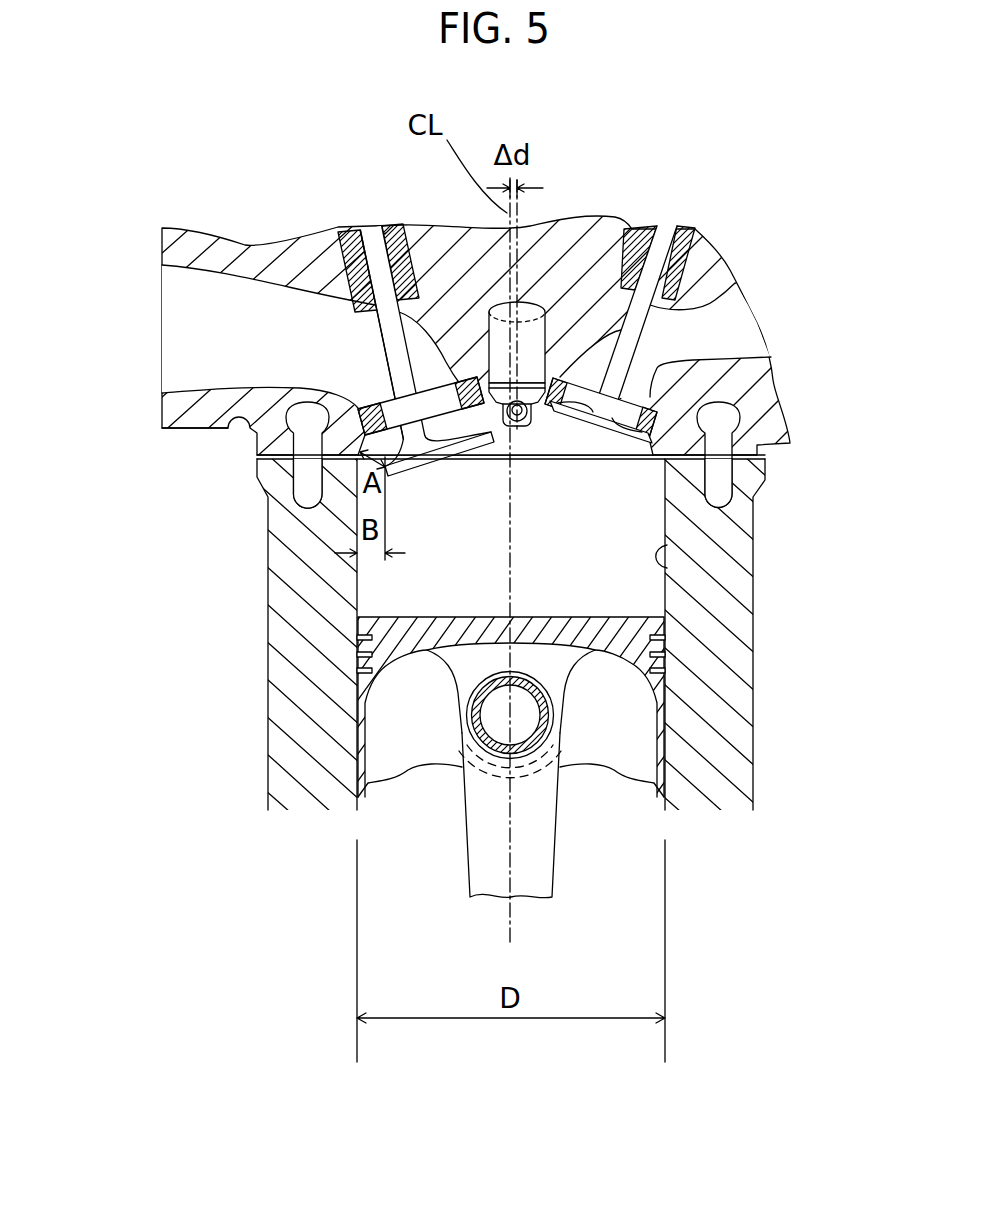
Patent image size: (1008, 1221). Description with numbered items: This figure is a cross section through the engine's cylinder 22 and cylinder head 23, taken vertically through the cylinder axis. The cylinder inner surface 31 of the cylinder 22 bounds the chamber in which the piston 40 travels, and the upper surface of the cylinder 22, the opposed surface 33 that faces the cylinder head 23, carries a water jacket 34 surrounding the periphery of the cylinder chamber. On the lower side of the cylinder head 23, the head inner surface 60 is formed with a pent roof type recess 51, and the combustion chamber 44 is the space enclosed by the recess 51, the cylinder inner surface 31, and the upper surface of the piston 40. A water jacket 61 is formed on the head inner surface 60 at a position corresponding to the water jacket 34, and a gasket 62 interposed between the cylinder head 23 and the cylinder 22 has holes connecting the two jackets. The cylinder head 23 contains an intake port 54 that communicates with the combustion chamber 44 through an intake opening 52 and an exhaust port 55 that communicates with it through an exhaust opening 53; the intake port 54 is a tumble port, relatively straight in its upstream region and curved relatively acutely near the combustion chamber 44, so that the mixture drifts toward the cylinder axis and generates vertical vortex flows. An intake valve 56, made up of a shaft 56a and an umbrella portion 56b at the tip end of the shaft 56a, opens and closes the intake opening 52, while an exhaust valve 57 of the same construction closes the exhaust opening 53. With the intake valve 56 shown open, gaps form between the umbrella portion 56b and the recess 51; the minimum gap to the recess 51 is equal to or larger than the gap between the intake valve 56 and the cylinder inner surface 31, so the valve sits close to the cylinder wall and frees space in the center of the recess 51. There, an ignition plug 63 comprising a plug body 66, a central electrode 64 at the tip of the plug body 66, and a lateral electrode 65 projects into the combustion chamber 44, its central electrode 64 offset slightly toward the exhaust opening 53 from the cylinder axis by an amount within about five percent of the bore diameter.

The cylinder 22 is at (268, 660).
The cylinder head 23 is at (252, 422).
The cylinder inner surface 31 is at (668, 568).
The opposed surface 33 is at (737, 453).
The water jacket 34 is at (294, 487).
The piston 40 is at (557, 617).
The combustion chamber 44 is at (430, 560).
The recess 51 is at (668, 555).
The intake opening 52 is at (457, 402).
The exhaust opening 53 is at (647, 407).
The intake port 54 is at (193, 320).
The exhaust port 55 is at (723, 330).
The intake valve 56 is at (325, 331).
The shaft 56a is at (393, 353).
The umbrella portion 56b is at (397, 407).
The exhaust valve 57 is at (735, 285).
The head inner surface 60 is at (752, 538).
The water jacket 61 is at (290, 447).
The gasket 62 is at (768, 458).
The ignition plug 63 is at (595, 280).
The central electrode 64 is at (517, 413).
The lateral electrode 65 is at (520, 413).
The plug body 66 is at (562, 345).